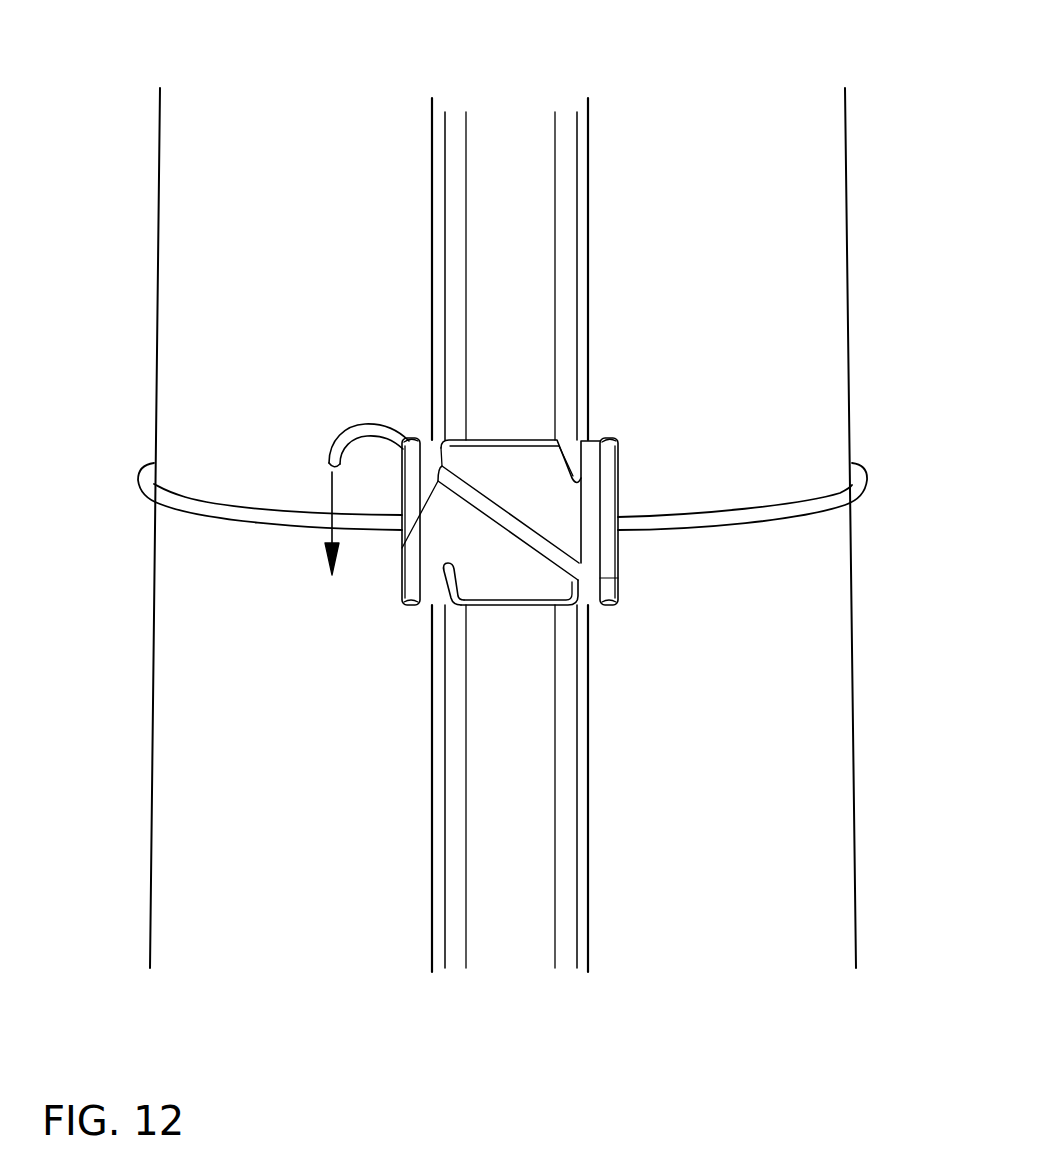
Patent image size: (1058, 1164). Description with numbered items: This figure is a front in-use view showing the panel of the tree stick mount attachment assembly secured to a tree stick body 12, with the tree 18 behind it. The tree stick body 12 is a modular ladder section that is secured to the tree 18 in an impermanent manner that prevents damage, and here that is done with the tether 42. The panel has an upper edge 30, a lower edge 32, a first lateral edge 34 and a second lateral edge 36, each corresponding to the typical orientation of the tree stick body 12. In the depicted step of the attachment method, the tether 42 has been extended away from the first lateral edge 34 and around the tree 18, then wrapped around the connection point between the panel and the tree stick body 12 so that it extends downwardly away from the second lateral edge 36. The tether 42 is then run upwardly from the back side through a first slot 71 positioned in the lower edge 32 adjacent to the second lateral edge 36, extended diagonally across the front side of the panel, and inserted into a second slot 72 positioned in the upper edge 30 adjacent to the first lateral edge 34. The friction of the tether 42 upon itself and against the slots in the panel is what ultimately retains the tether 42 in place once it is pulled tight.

The tree stick body 12 is at (570, 158).
The tree 18 is at (817, 241).
The upper edge 30 is at (496, 562).
The lower edge 32 is at (505, 605).
The first lateral edge 34 is at (402, 555).
The second lateral edge 36 is at (618, 550).
The tether 42 is at (830, 508).
The first slot 71 is at (618, 580).
The second slot 72 is at (400, 545).